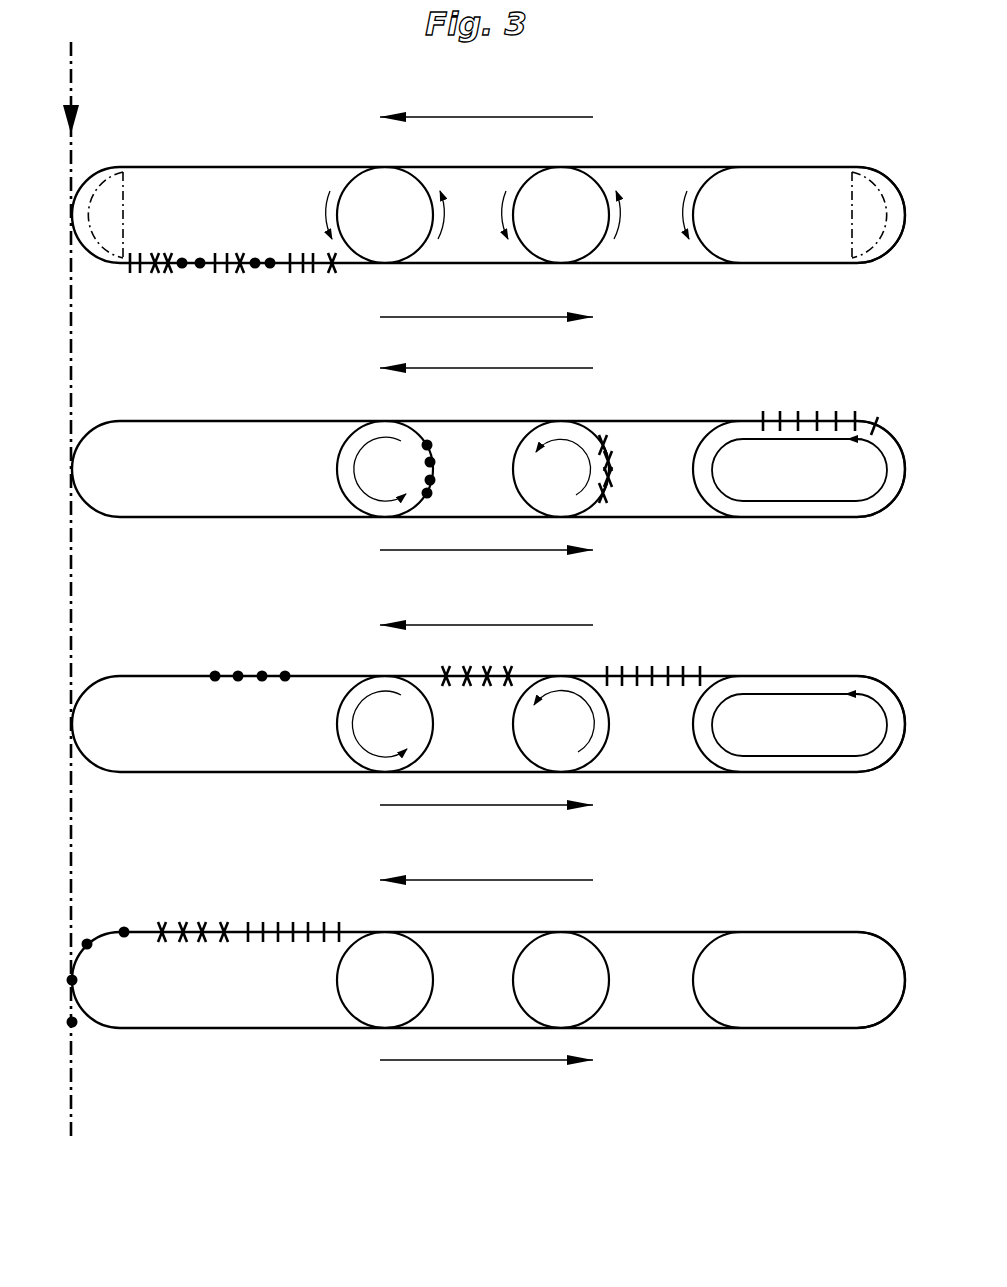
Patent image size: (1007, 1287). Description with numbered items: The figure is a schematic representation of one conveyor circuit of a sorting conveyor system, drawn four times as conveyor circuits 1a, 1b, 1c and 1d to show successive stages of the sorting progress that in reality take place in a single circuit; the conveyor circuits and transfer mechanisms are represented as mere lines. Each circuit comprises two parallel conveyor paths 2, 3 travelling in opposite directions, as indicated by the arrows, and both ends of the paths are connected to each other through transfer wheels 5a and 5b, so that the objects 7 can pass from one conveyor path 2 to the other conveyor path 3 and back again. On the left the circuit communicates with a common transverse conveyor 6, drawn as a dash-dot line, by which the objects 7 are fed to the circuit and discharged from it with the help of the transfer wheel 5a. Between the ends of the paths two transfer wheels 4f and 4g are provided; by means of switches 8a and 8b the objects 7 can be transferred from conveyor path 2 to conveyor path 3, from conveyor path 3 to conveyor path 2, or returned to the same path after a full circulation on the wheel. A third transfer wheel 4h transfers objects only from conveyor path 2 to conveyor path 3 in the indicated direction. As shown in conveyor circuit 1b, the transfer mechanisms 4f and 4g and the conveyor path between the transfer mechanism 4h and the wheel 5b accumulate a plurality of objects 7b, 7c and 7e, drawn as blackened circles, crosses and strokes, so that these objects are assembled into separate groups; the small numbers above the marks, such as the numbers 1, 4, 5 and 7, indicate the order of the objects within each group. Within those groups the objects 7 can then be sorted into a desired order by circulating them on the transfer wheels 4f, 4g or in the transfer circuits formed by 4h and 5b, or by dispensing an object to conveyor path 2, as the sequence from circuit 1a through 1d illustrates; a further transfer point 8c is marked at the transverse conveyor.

The conveyor circuit 1a is at (898, 306).
The conveyor circuit 1b is at (895, 566).
The conveyor circuit 1c is at (895, 821).
The conveyor circuit 1d is at (910, 1078).
The conveyor path 2 is at (259, 167).
The conveyor path 3 is at (505, 263).
The transfer wheel 4f is at (398, 190).
The transfer wheel 4g is at (562, 190).
The third transfer wheel 4h is at (730, 197).
The transfer wheel 5a is at (95, 202).
The transfer wheel 5b is at (874, 200).
The transverse conveyor 6 is at (74, 587).
The objects 7b is at (198, 251).
The objects 7c is at (162, 252).
The objects 7e is at (140, 253).
The switch 8a is at (385, 263).
The switch 8b is at (383, 167).
The end transfer point 8c is at (69, 213).
The workpiece sequence number 1 is at (496, 598).
The workpiece sequence number 4 is at (478, 600).
The workpiece sequence number 5 is at (522, 598).
The objects 7 is at (537, 598).